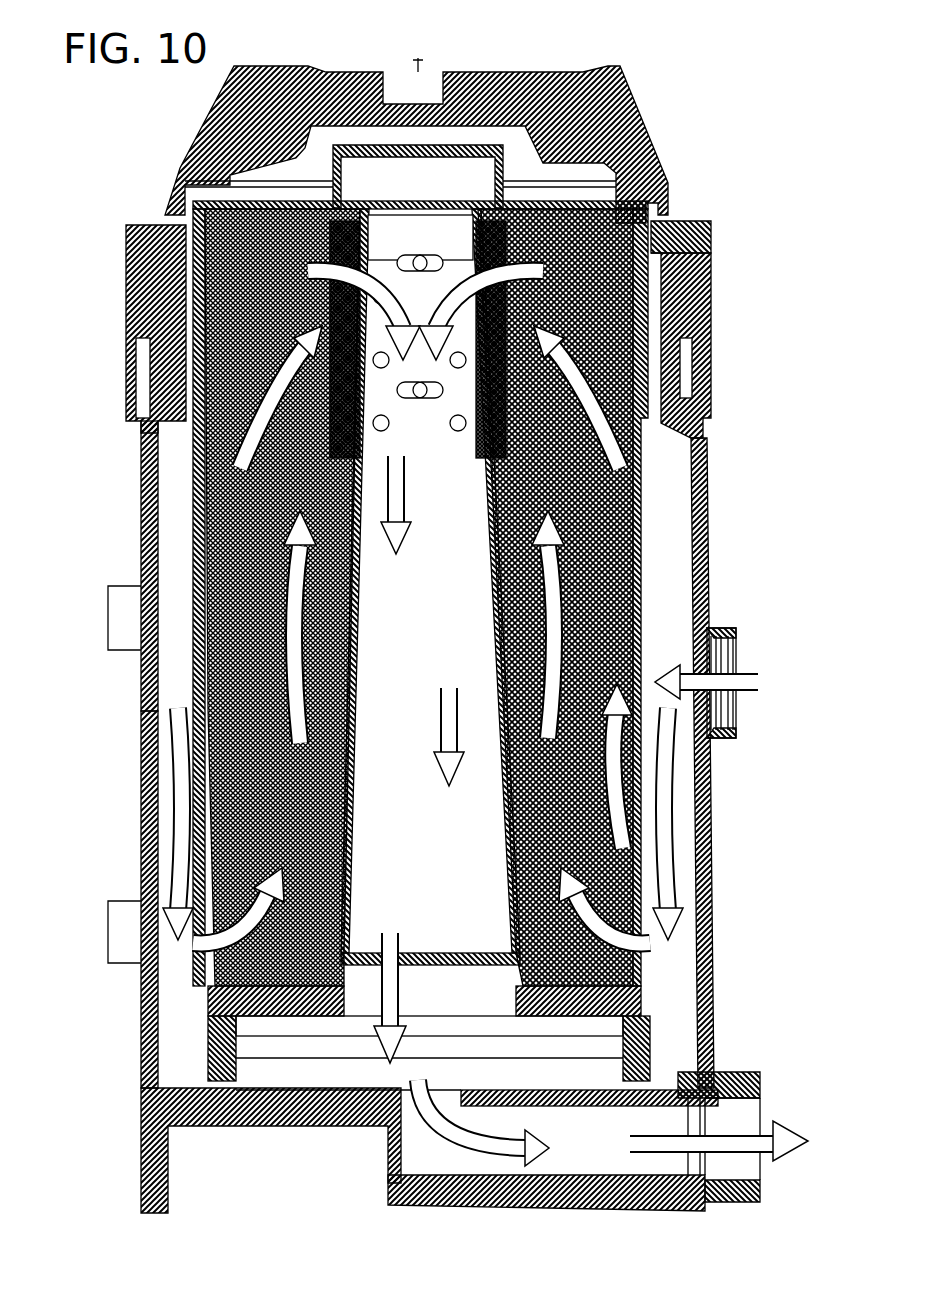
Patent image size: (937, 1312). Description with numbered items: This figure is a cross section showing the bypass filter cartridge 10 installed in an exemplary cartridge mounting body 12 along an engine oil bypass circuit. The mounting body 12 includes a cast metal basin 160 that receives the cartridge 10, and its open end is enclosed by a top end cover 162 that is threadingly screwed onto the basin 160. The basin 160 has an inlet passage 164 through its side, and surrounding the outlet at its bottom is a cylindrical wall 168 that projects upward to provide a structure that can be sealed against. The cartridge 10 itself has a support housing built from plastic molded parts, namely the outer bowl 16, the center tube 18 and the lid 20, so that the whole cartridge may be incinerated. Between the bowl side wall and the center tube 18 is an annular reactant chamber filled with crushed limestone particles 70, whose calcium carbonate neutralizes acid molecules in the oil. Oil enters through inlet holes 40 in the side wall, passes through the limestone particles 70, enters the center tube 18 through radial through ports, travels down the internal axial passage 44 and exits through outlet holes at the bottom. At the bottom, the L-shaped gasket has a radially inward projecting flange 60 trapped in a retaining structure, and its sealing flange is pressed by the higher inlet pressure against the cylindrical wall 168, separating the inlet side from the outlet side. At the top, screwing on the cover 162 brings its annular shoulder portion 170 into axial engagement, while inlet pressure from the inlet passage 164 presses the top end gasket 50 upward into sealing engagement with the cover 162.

The bypass filter cartridge 10 is at (168, 744).
The cartridge mounting body 12 is at (118, 518).
The outer plastic molded bowl 16 is at (700, 322).
The center tube 18 is at (195, 598).
The lid 20 is at (608, 160).
The inlet holes 40 is at (180, 925).
The internal axial passage 44 is at (428, 637).
The top end gasket 50 is at (703, 232).
The radially inward projecting flange 60 is at (135, 838).
The crushed limestone particles 70 is at (205, 450).
The basin 160 is at (433, 1118).
The top end cover 162 is at (222, 88).
The inlet passage 164 is at (718, 648).
The cylindrical wall 168 is at (235, 1055).
The annular shoulder portion 170 is at (666, 196).